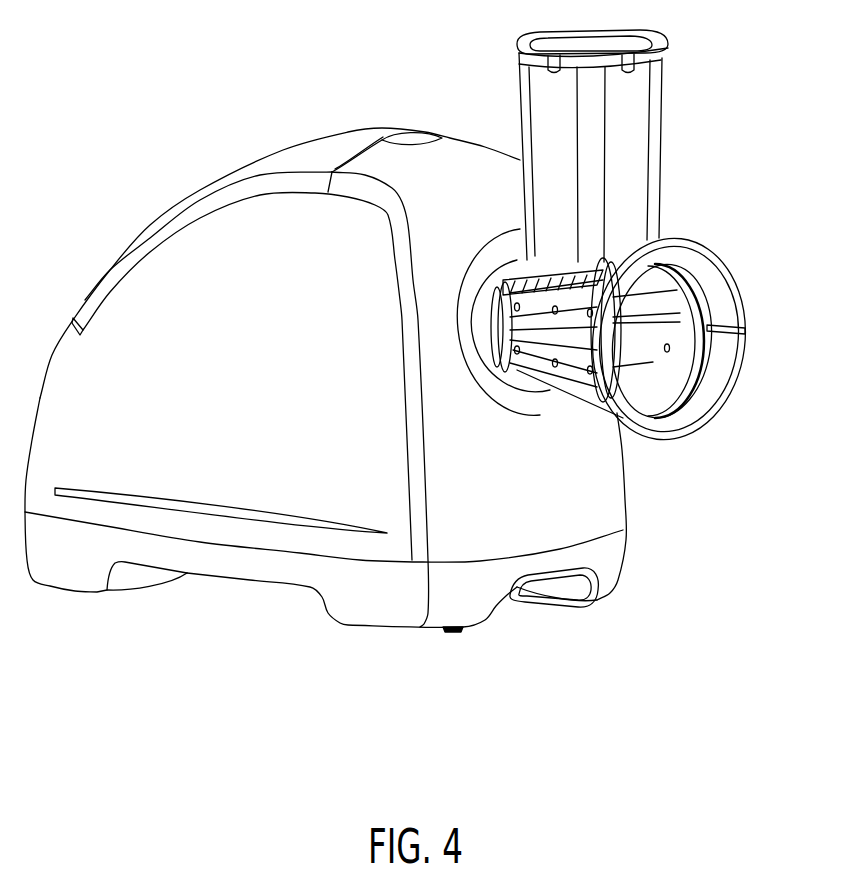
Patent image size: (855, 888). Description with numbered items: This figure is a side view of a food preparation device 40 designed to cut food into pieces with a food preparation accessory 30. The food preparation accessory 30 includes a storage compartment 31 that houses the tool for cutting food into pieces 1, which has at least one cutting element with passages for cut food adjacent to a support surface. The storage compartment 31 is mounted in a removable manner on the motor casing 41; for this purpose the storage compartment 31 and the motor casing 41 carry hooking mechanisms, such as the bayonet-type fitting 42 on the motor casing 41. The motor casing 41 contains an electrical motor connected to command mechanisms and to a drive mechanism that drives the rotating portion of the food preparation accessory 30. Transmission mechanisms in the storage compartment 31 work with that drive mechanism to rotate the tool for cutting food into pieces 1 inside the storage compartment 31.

The tool for cutting food into pieces 1 is at (657, 360).
The food preparation accessory 30 is at (678, 443).
The storage compartment 31 is at (723, 250).
The food preparation device 40 is at (268, 586).
The motor casing 41 is at (393, 542).
The hooking mechanism 42 is at (507, 260).